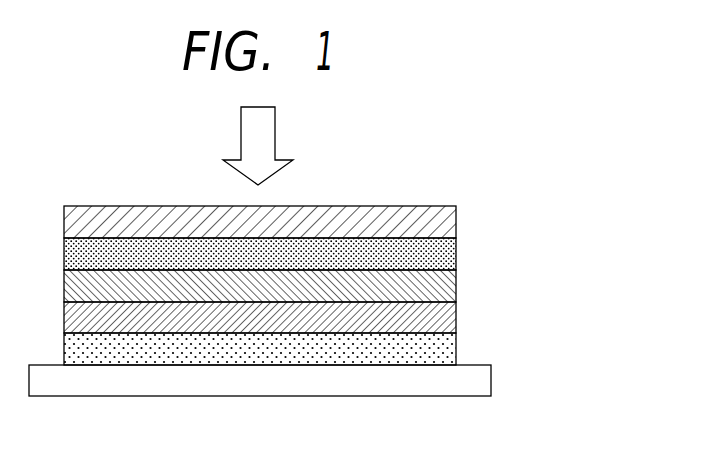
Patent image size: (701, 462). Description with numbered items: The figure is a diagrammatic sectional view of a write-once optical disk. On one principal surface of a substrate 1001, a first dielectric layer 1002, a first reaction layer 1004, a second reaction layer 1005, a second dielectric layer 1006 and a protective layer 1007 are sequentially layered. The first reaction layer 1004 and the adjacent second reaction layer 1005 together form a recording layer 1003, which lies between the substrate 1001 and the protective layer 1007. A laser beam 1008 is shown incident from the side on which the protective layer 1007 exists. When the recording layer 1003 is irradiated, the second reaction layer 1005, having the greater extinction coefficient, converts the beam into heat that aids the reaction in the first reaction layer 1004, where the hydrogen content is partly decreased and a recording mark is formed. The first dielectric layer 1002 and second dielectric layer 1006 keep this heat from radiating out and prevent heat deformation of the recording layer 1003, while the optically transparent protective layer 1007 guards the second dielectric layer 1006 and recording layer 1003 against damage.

The substrate 1001 is at (483, 382).
The first dielectric layer 1002 is at (453, 353).
The recording layer 1003 is at (374, 291).
The first reaction layer 1004 is at (440, 315).
The second reaction layer 1005 is at (440, 278).
The second dielectric layer 1006 is at (440, 248).
The protective layer 1007 is at (443, 220).
The laser beam 1008 is at (267, 136).